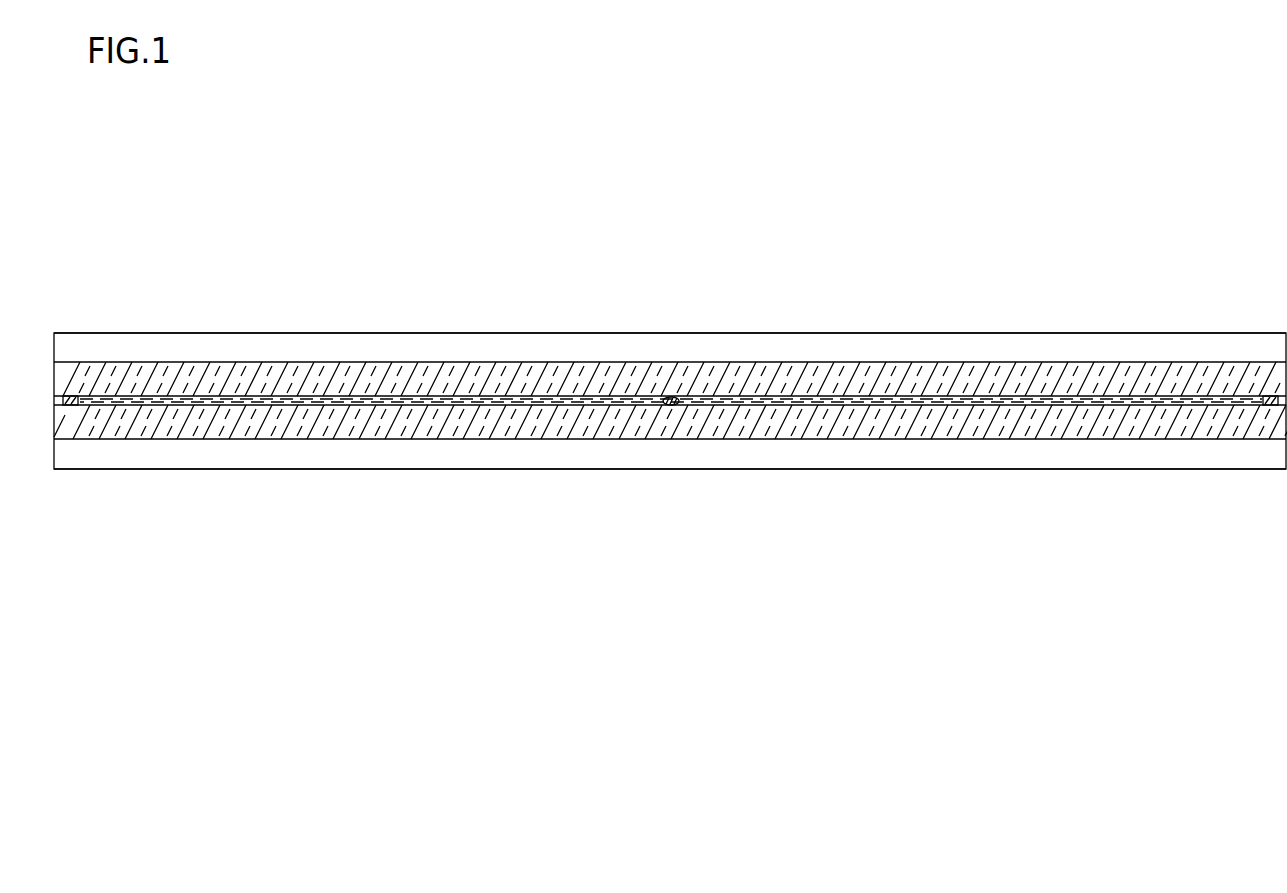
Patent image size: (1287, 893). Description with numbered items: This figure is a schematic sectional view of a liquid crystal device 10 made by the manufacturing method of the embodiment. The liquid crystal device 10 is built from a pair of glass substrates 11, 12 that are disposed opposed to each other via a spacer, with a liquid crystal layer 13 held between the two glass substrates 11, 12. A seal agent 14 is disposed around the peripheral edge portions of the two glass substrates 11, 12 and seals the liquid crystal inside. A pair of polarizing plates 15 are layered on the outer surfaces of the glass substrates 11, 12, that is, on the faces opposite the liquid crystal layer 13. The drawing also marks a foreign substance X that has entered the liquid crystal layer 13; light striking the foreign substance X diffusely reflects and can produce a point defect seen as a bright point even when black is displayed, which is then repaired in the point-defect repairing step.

The liquid crystal device 10 is at (152, 472).
The glass substrate 11 is at (1120, 373).
The glass substrate 12 is at (1080, 423).
The liquid crystal layer 13 is at (915, 402).
The seal agent 14 is at (73, 397).
The polarizing plate 15 is at (287, 472).
The foreign substance X is at (671, 398).